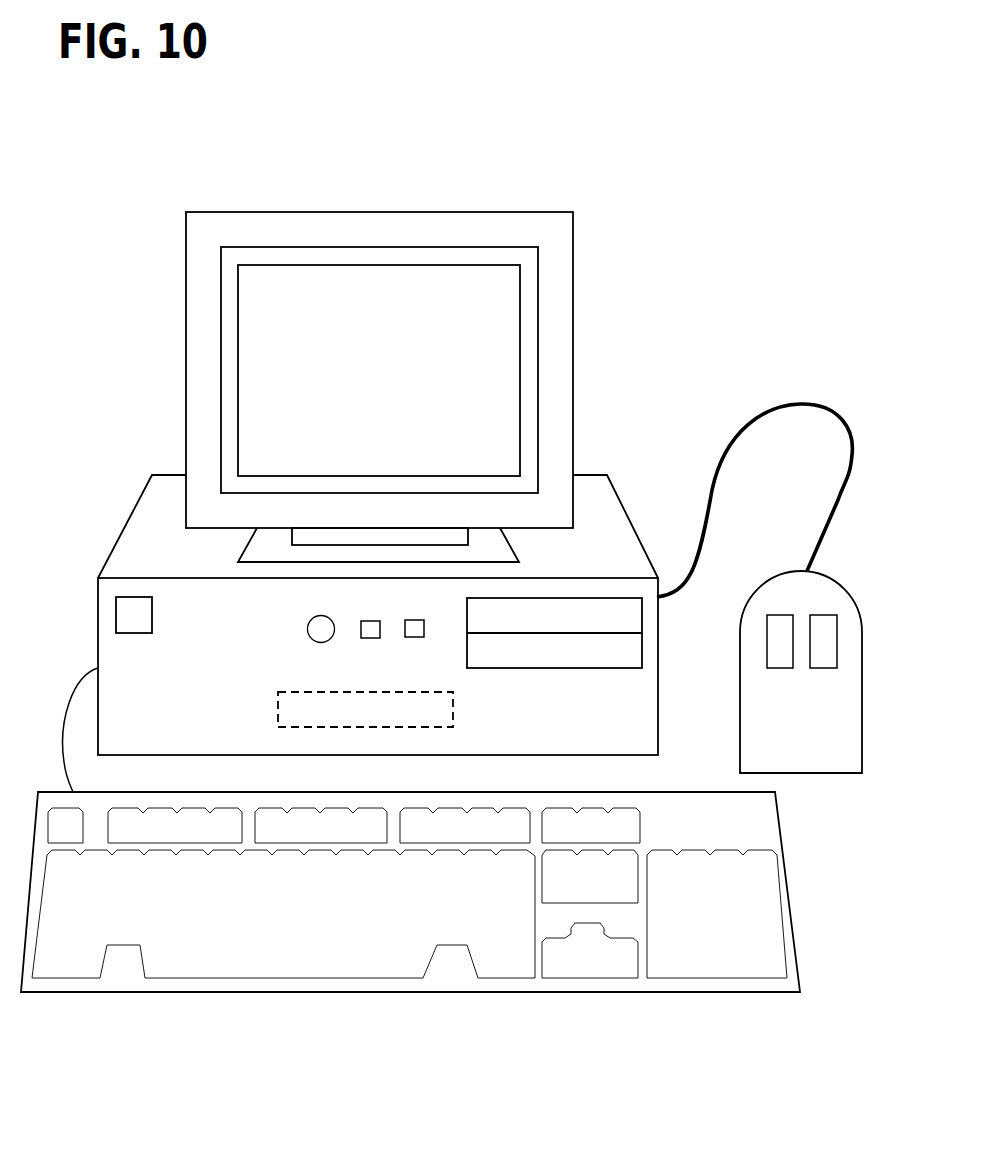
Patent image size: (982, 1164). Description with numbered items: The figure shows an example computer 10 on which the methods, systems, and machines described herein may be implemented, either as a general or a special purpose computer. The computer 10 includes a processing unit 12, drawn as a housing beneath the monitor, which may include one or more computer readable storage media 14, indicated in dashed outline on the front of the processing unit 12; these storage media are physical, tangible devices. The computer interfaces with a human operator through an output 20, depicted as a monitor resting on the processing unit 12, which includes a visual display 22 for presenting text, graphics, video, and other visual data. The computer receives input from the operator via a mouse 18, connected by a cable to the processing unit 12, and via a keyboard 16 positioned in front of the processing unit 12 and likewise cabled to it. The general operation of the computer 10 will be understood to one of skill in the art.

The computer 10 is at (664, 80).
The processing unit 12 is at (660, 668).
The computer readable storage media 14 is at (453, 710).
The keyboard 16 is at (765, 967).
The mouse 18 is at (862, 673).
The output 20 is at (573, 370).
The visual display 22 is at (378, 370).